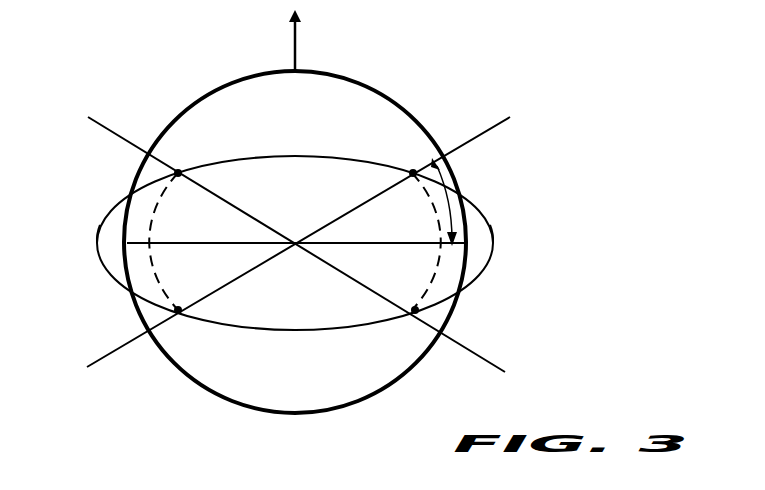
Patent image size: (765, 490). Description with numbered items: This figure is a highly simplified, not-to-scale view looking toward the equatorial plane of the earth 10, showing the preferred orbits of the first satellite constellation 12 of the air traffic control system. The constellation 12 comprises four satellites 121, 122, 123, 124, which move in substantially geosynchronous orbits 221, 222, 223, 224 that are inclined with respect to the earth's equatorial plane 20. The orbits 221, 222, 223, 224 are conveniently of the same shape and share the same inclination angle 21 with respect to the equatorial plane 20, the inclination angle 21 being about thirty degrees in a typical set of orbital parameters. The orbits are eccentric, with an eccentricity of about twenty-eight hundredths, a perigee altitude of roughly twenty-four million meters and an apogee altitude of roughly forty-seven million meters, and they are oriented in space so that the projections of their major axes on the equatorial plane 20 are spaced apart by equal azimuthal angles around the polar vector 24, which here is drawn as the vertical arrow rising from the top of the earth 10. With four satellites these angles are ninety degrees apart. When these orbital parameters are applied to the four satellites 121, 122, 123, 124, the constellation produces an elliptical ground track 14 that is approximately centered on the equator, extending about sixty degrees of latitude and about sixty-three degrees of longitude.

The earth 10 is at (303, 414).
The first satellite constellation 12 is at (128, 410).
The elliptical ground track 14 is at (146, 305).
The equatorial plane 20 is at (360, 244).
The inclination angle 21 is at (456, 212).
The polar vector 24 is at (298, 45).
The satellite 121 is at (415, 315).
The satellite 122 is at (178, 315).
The satellite 123 is at (413, 168).
The satellite 124 is at (179, 168).
The inclined geosynchronous orbit 221 is at (131, 143).
The inclined geosynchronous orbit 222 is at (97, 240).
The inclined geosynchronous orbit 223 is at (466, 143).
The inclined geosynchronous orbit 224 is at (492, 244).